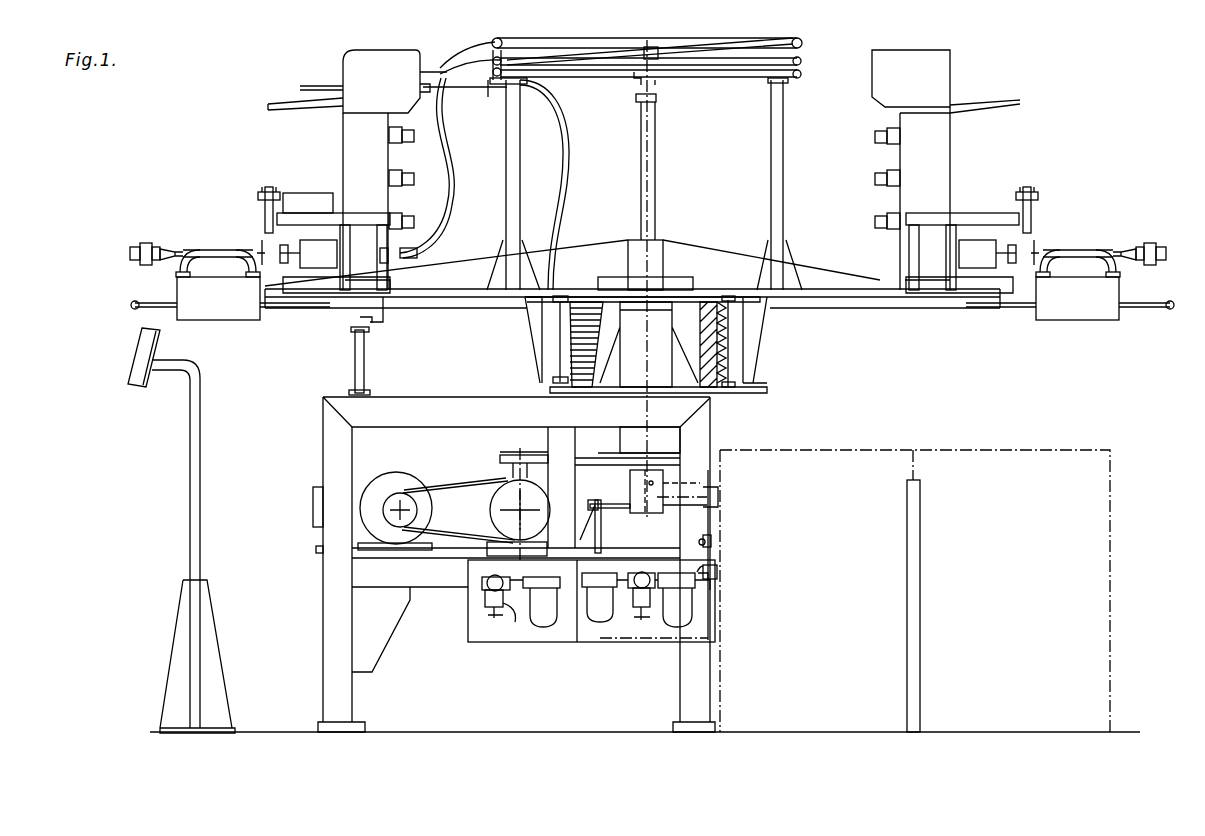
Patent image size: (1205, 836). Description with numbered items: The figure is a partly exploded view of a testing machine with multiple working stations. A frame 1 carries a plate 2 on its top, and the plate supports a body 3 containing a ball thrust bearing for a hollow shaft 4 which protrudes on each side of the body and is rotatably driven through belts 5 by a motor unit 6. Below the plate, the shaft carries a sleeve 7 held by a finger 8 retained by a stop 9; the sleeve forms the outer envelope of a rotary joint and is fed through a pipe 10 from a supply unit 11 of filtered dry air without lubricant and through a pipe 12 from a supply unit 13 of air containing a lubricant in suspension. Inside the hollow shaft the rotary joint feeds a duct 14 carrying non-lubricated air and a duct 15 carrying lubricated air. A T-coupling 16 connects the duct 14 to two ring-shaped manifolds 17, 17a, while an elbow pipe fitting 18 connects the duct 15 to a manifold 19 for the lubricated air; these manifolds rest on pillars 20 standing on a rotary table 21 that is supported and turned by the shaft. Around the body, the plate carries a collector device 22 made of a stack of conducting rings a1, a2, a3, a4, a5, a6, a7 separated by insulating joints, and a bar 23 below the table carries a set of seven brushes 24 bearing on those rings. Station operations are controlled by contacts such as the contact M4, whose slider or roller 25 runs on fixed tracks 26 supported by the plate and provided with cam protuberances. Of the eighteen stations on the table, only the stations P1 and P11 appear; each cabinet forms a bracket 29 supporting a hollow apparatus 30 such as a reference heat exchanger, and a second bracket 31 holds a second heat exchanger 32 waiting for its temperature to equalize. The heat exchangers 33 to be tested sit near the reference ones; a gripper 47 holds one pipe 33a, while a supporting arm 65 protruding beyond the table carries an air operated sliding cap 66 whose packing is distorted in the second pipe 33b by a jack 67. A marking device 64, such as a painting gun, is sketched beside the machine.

The frame 1 is at (332, 585).
The plate 2 is at (338, 405).
The body 3 is at (664, 361).
The hollow shaft 4 is at (656, 245).
The belts 5 is at (598, 448).
The motor unit 6 is at (500, 499).
The sleeve 7 is at (720, 500).
The finger 8 is at (617, 503).
The stop 9 is at (589, 542).
The pipe 10 is at (718, 572).
The supply unit 11 is at (529, 610).
The pipe 12 is at (712, 542).
The supply unit 13 is at (672, 618).
The duct 14 is at (656, 144).
The duct 15 is at (640, 150).
The T-coupling 16 is at (653, 47).
The ring-shaped manifold 17 is at (798, 38).
The ring-shaped manifold 17a is at (801, 60).
The elbow pipe fitting 18 is at (636, 82).
The manifold 19 is at (802, 74).
The pillars 20 is at (507, 130).
The rotary table 21 is at (835, 287).
The collector device 22 is at (577, 348).
The bar 23 is at (560, 369).
The brushes 24 is at (567, 326).
The slider or roller 25 is at (357, 321).
The fixed tracks 26 is at (352, 334).
The bracket 29 is at (360, 214).
The hollow apparatus 30 is at (316, 193).
The second bracket 31 is at (277, 108).
The second heat exchanger 32 is at (311, 86).
The heat exchangers 33 is at (210, 303).
The pipe 33a is at (254, 248).
The second pipe 33b is at (181, 248).
The gripper 47 is at (265, 210).
The marking device 64 is at (141, 333).
The supporting arm 65 is at (206, 248).
The sliding cap 66 is at (145, 243).
The jack 67 is at (132, 259).
The testing station P1 is at (931, 57).
The testing station P11 is at (456, 166).
The contact M4 is at (378, 318).
The conducting ring a1 is at (728, 310).
The conducting ring a2 is at (728, 320).
The conducting ring a3 is at (728, 330).
The conducting ring a4 is at (728, 340).
The conducting ring a5 is at (728, 350).
The conducting ring a6 is at (728, 360).
The conducting ring a7 is at (728, 370).